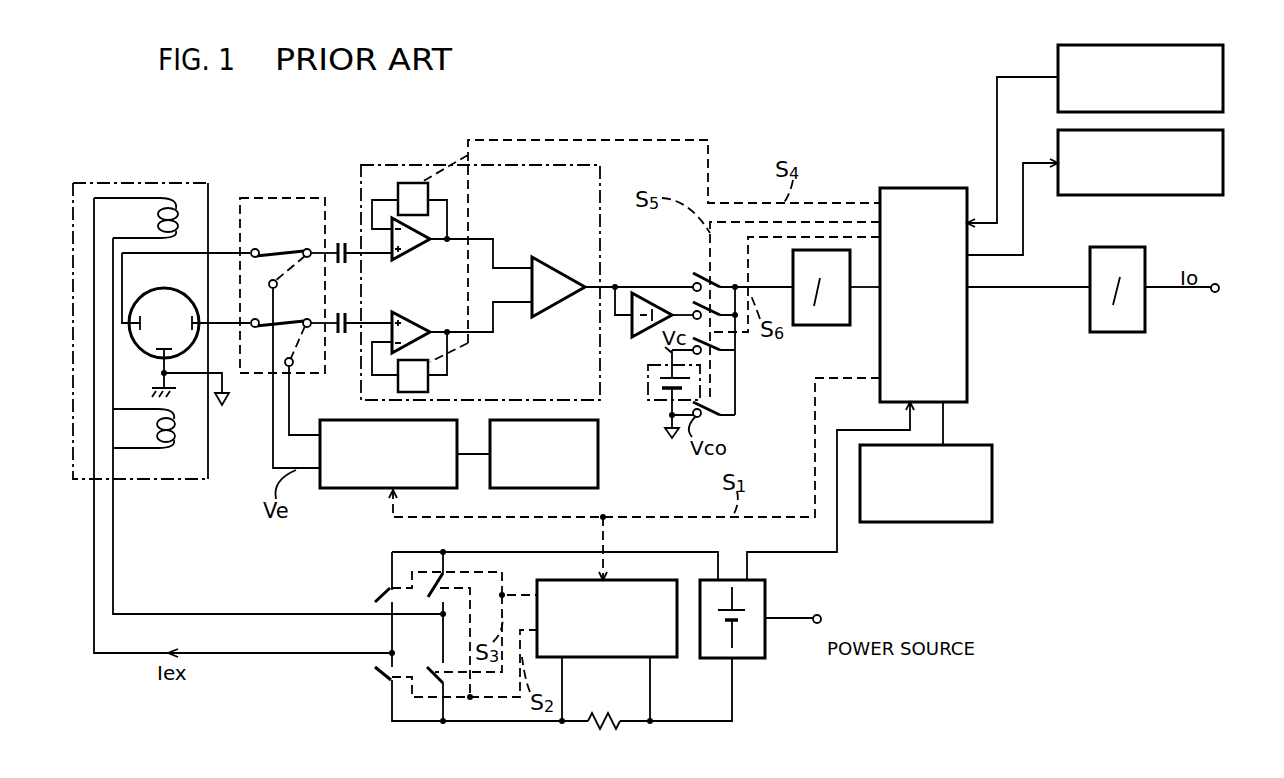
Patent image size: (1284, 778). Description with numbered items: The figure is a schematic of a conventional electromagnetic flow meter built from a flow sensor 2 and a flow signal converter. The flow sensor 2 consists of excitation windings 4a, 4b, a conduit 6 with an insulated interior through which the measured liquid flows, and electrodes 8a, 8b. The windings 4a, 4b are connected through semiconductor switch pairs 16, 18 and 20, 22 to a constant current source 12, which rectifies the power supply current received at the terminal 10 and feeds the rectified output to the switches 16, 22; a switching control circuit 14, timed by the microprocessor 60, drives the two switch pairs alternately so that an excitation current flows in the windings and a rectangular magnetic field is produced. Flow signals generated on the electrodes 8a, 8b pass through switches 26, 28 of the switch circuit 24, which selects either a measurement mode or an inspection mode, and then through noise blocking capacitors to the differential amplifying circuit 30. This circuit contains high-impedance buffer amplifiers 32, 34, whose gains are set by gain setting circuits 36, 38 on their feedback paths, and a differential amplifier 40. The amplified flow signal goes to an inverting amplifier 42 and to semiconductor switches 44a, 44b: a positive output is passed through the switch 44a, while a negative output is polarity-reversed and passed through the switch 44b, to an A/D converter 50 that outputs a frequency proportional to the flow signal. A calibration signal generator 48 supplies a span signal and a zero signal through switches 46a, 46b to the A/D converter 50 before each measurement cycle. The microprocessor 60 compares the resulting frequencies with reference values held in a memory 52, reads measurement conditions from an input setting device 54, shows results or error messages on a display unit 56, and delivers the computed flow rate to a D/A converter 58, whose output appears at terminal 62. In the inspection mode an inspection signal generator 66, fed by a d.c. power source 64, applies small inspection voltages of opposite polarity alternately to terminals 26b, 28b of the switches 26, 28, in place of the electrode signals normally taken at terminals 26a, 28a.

The flow sensor 2 is at (168, 182).
The excitation winding 4a is at (176, 206).
The excitation winding 4b is at (178, 452).
The conduit 6 is at (143, 291).
The electrode 8a is at (140, 345).
The electrode 8b is at (199, 313).
The terminal 10 is at (817, 615).
The constant current source 12 is at (755, 660).
The switching control circuit 14 is at (620, 658).
The semiconductor switch 16 is at (433, 590).
The semiconductor switch 18 is at (387, 681).
The semiconductor switch 20 is at (388, 579).
The semiconductor switch 22 is at (437, 684).
The switch circuit 24 is at (278, 197).
The switch 26 is at (280, 249).
The terminal of switch 26 26a is at (255, 249).
The terminal of switch 26 26b is at (269, 281).
The switch 28 is at (293, 320).
The terminal of switch 28 28a is at (218, 390).
The terminal of switch 28 28b is at (293, 366).
The differential amplifying circuit 30 is at (560, 163).
The buffer amplifier 32 is at (397, 261).
The buffer amplifier 34 is at (428, 320).
The gain setting circuit 36 is at (430, 186).
The gain setting circuit 38 is at (430, 380).
The differential amplifier 40 is at (540, 258).
The inverting amplifier 42 is at (636, 336).
The semiconductor switch 44a is at (696, 270).
The semiconductor switch 44b is at (693, 284).
The switch 46a is at (718, 353).
The switch 46b is at (718, 416).
The calibration signal generator 48 is at (653, 400).
The A/D converter 50 is at (835, 326).
The memory 52 is at (993, 477).
The input setting device 54 is at (1225, 63).
The display unit 56 is at (1225, 149).
The D/A converter 58 is at (1120, 333).
The microprocessor (MPU) 60 is at (921, 188).
The output terminal 62 is at (1215, 293).
The d.c. power source 64 is at (598, 462).
The inspection signal generator 66 is at (338, 490).